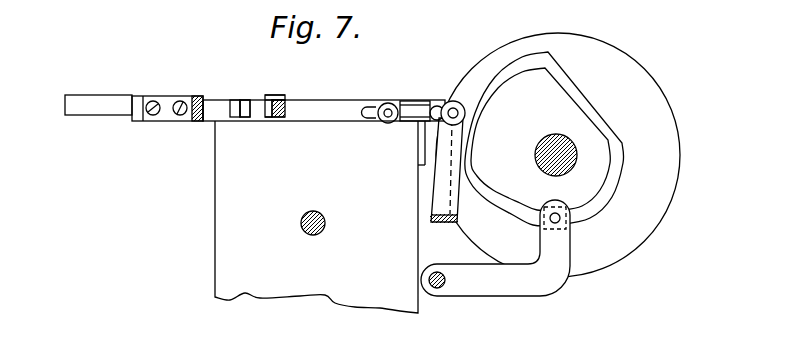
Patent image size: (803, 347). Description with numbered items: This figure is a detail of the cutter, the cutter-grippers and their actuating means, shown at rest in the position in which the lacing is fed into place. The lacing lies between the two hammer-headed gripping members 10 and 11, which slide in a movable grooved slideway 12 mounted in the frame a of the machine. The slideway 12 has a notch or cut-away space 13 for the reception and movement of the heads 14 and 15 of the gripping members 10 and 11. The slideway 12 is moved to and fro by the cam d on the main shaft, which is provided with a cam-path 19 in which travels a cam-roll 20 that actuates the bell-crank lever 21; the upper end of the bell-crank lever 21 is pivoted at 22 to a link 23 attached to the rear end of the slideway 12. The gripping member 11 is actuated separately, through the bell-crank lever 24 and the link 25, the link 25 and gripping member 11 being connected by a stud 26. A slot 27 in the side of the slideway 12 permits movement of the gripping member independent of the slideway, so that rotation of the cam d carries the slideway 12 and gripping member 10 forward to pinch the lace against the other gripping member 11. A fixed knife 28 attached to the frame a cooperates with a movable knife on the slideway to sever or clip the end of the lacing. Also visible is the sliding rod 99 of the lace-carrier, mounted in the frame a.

The gripping member 10 is at (237, 100).
The gripping member 11 is at (284, 112).
The slideway 12 is at (333, 110).
The notch or cut-away space 13 is at (256, 112).
The head 14 is at (245, 100).
The head 15 is at (280, 100).
The cam-path 19 is at (618, 143).
The cam-roll 20 is at (568, 224).
The bell-crank lever 21 is at (533, 282).
The pivot 22 is at (445, 101).
The link 23 is at (434, 103).
The bell-crank lever 24 is at (442, 186).
The link 25 is at (413, 112).
The stud 26 is at (387, 123).
The slot 27 is at (366, 119).
The fixed knife 28 is at (267, 119).
The sliding rod 99 is at (304, 232).
The frame a is at (234, 199).
The cam d is at (632, 68).